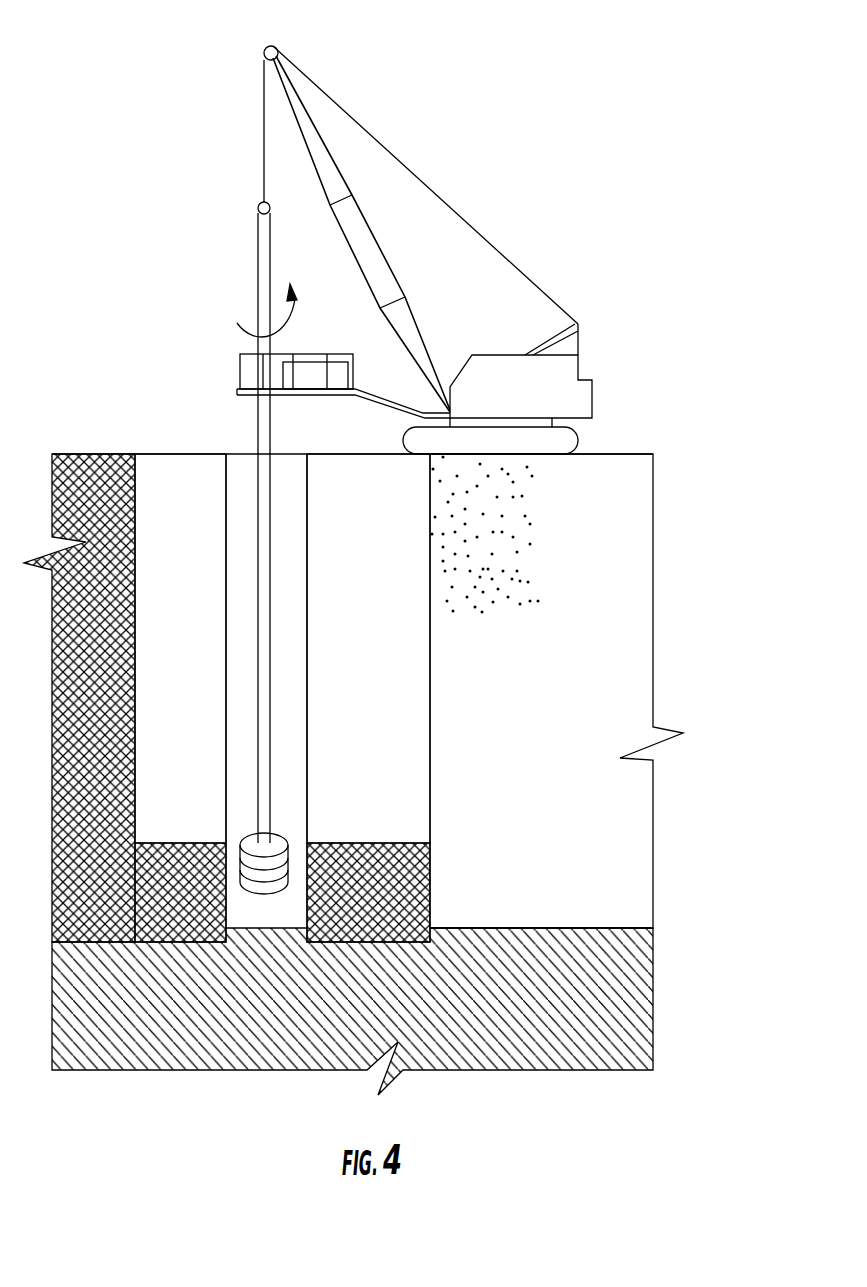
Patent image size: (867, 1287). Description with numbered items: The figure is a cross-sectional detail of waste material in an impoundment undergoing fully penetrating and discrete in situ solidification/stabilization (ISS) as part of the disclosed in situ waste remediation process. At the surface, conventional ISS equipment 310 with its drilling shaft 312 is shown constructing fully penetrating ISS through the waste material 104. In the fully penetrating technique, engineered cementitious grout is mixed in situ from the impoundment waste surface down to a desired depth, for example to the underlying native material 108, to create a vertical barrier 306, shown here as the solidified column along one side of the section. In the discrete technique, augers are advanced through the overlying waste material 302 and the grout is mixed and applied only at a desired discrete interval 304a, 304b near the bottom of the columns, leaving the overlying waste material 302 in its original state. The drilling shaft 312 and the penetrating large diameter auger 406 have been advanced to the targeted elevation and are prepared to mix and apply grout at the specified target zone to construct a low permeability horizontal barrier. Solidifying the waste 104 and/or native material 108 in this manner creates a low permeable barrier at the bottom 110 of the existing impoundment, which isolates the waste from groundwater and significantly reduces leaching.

The waste material 104 is at (530, 675).
The native material 108 is at (324, 1023).
The bottom of the impoundment 110 is at (605, 928).
The overlying waste material 302 is at (195, 651).
The discrete interval 304a is at (155, 943).
The discrete interval 304b is at (373, 942).
The vertical barrier 306 is at (135, 436).
The ISS equipment 310 is at (425, 173).
The drilling shaft 312 is at (262, 273).
The penetrating large diameter auger 406 is at (262, 888).